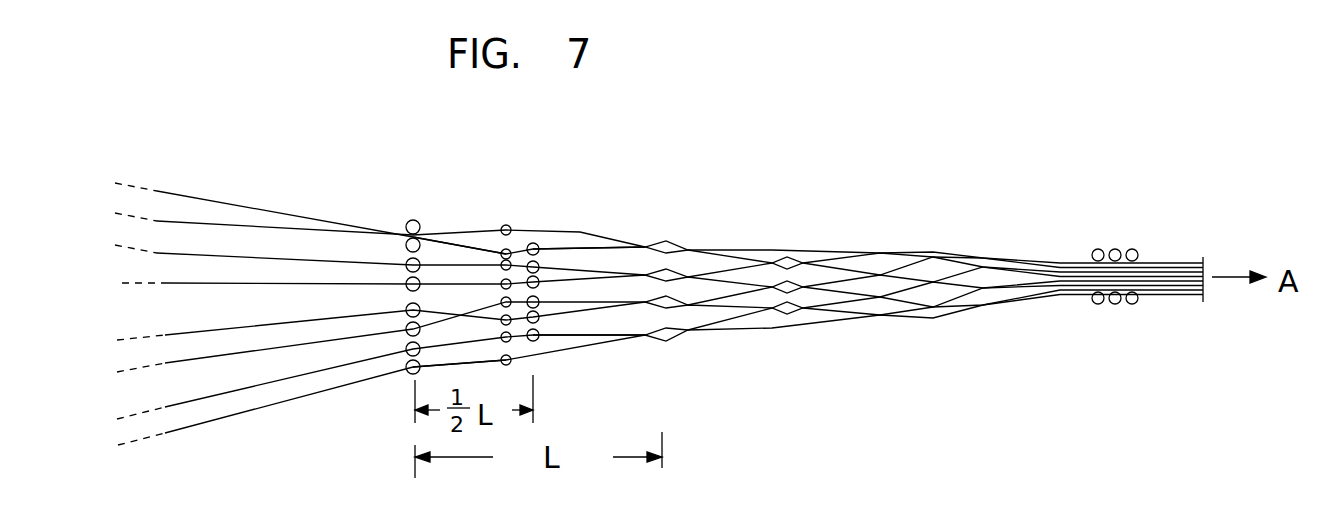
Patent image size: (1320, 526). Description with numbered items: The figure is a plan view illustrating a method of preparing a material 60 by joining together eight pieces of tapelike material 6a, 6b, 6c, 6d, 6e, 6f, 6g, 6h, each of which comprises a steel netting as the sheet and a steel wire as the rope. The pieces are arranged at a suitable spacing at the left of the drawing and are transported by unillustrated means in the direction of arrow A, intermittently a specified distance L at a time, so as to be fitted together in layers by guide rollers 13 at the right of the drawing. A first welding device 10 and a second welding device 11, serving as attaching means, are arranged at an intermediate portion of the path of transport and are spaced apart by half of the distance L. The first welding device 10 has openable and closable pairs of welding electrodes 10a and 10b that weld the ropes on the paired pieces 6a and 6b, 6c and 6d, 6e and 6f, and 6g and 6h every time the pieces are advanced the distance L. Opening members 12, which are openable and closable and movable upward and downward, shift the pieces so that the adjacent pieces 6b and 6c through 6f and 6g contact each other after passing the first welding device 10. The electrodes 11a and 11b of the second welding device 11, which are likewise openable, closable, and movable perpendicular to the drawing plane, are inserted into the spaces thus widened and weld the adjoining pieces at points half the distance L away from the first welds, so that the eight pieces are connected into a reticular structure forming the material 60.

The tapelike material piece 6a is at (208, 191).
The tapelike material piece 6b is at (245, 224).
The tapelike material piece 6c is at (278, 261).
The tapelike material piece 6d is at (312, 283).
The tapelike material piece 6e is at (178, 338).
The tapelike material piece 6f is at (243, 350).
The tapelike material piece 6g is at (288, 381).
The tapelike material piece 6h is at (337, 388).
The first welding device 10 is at (490, 125).
The welding electrode 10a is at (406, 230).
The welding electrode 10b is at (440, 245).
The second welding device 11 is at (658, 130).
The welding electrode 11a is at (532, 240).
The welding electrode 11b is at (582, 242).
The opening member 12 is at (503, 227).
The guide roller 13 is at (1132, 249).
The material 60 is at (1177, 258).